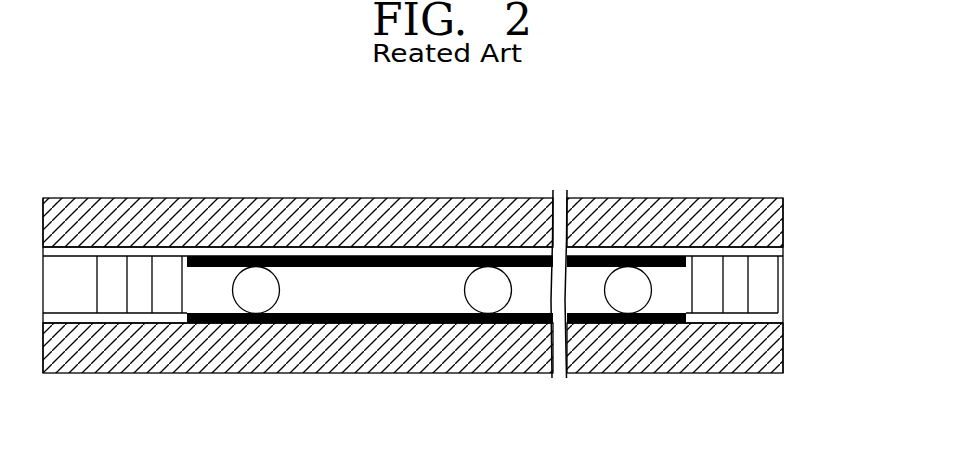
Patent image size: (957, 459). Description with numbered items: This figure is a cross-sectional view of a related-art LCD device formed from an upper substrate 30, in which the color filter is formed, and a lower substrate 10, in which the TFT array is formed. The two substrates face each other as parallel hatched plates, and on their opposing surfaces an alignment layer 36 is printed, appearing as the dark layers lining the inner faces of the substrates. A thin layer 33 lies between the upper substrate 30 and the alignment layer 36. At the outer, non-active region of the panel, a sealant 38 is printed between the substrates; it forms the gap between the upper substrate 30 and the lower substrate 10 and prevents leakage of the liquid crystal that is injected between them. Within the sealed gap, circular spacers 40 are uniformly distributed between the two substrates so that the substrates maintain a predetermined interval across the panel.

The lower substrate 10 is at (780, 341).
The upper substrate 30 is at (775, 220).
The alignment layer 33 is at (780, 249).
The alignment layer 36 is at (382, 267).
The sealant 38 is at (773, 287).
The circular spacer 40 is at (488, 306).